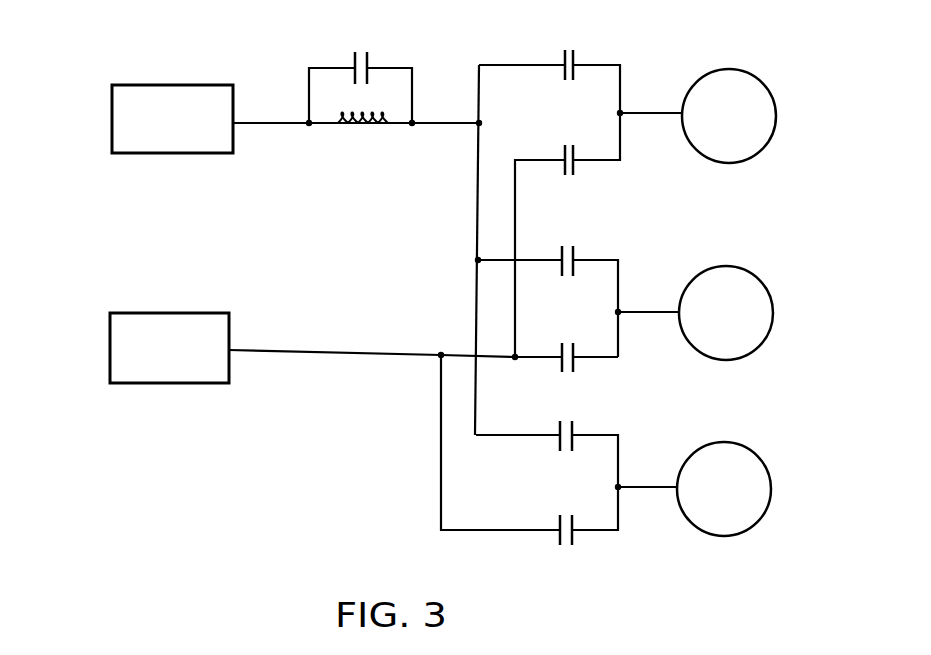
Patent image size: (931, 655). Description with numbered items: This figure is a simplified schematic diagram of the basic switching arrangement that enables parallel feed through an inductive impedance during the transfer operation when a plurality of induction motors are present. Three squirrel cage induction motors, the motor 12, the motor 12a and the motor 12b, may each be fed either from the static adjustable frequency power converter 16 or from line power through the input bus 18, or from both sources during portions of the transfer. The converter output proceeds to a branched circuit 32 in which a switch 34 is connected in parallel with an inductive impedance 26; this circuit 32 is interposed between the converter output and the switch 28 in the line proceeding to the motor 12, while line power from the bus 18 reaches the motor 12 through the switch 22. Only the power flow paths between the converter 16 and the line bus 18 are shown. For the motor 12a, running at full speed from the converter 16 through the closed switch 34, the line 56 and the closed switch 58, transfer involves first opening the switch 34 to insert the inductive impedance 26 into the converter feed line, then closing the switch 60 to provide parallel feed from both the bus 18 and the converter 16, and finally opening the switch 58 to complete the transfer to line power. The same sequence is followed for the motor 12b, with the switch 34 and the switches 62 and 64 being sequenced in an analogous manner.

The motor 12 is at (745, 143).
The motor 12a is at (743, 347).
The motor 12b is at (743, 523).
The static adjustable frequency power converter 16 is at (123, 97).
The input bus 18 is at (118, 329).
The switch 22 is at (567, 142).
The inductive impedance 26 is at (355, 128).
The switch 28 is at (567, 45).
The branched circuit 32 is at (333, 90).
The switch 34 is at (352, 53).
The line 56 is at (478, 190).
The switch 58 is at (568, 248).
The switch 60 is at (567, 373).
The switch 62 is at (565, 425).
The switch 64 is at (565, 548).